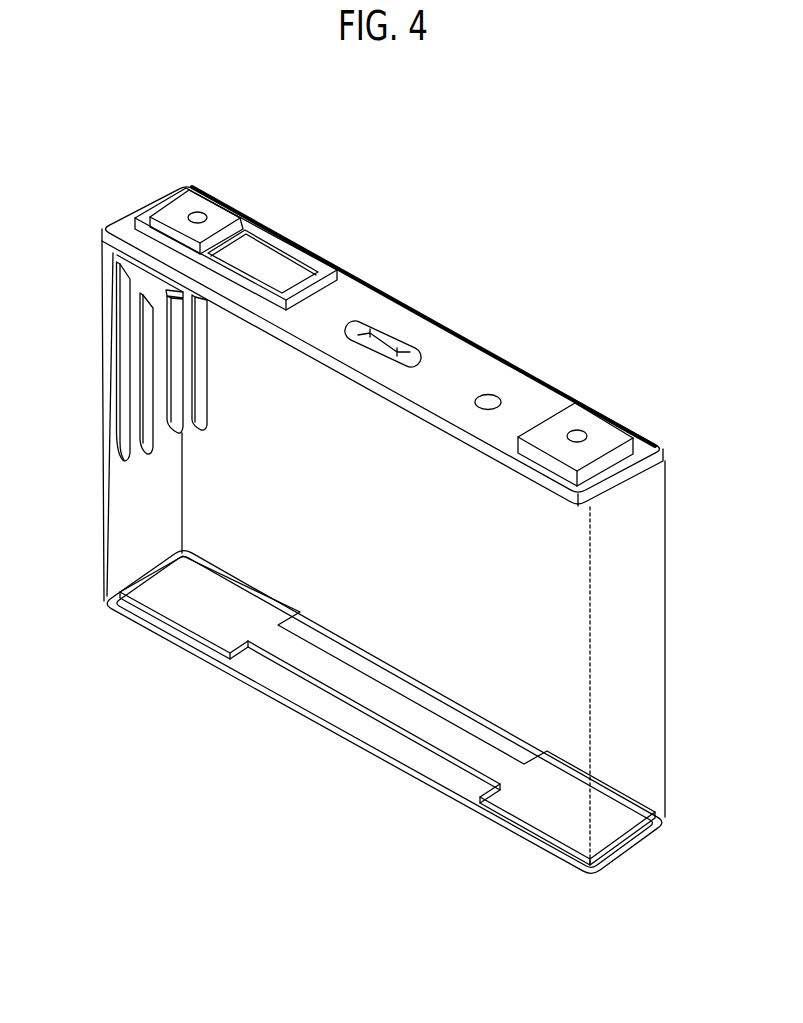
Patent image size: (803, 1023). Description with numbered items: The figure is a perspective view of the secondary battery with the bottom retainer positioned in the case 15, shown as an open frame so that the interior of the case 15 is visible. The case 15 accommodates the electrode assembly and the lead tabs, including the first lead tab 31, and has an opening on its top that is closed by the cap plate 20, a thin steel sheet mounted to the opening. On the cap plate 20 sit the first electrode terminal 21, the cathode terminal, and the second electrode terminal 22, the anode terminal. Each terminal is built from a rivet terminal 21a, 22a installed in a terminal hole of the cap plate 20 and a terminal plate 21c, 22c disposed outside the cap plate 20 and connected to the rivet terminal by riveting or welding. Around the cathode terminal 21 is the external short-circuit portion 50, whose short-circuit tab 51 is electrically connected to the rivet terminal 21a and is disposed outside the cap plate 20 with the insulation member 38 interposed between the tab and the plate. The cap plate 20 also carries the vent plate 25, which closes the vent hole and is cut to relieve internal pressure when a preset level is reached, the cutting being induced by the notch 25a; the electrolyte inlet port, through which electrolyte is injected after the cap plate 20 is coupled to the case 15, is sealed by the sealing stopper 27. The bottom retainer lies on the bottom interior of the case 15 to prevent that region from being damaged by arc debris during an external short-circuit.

The case 15 is at (298, 693).
The cap plate 20 is at (415, 304).
The first electrode terminal 21 is at (221, 178).
The rivet terminal 21a is at (226, 215).
The terminal plate 21c is at (196, 215).
The second electrode terminal 22 is at (623, 402).
The rivet terminal 22a is at (580, 433).
The terminal plate 22c is at (607, 435).
The vent plate 25 is at (408, 304).
The notch 25a is at (397, 334).
The sealing stopper 27 is at (491, 398).
The first lead tab 31 is at (125, 365).
The insulation member 38 is at (266, 227).
The external short-circuit portion 50 is at (262, 240).
The short-circuit tab 51 is at (288, 272).